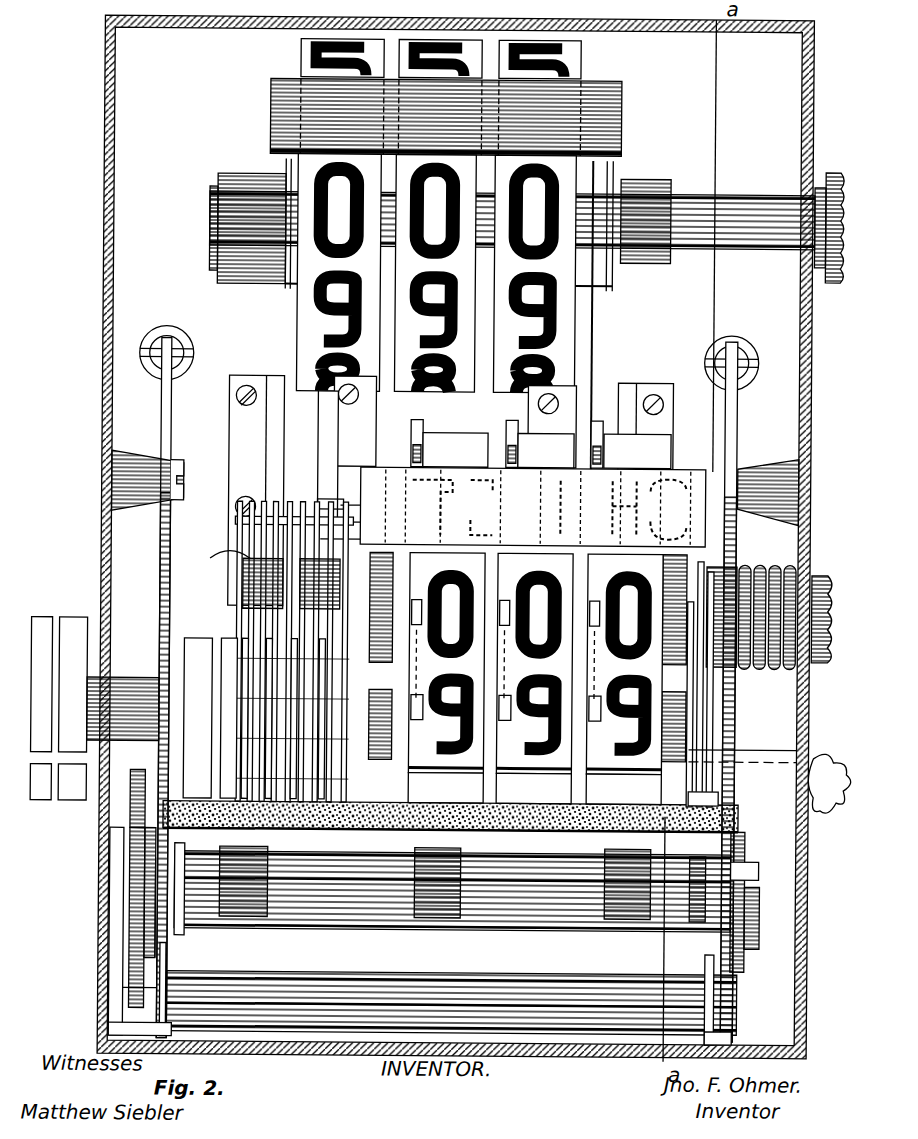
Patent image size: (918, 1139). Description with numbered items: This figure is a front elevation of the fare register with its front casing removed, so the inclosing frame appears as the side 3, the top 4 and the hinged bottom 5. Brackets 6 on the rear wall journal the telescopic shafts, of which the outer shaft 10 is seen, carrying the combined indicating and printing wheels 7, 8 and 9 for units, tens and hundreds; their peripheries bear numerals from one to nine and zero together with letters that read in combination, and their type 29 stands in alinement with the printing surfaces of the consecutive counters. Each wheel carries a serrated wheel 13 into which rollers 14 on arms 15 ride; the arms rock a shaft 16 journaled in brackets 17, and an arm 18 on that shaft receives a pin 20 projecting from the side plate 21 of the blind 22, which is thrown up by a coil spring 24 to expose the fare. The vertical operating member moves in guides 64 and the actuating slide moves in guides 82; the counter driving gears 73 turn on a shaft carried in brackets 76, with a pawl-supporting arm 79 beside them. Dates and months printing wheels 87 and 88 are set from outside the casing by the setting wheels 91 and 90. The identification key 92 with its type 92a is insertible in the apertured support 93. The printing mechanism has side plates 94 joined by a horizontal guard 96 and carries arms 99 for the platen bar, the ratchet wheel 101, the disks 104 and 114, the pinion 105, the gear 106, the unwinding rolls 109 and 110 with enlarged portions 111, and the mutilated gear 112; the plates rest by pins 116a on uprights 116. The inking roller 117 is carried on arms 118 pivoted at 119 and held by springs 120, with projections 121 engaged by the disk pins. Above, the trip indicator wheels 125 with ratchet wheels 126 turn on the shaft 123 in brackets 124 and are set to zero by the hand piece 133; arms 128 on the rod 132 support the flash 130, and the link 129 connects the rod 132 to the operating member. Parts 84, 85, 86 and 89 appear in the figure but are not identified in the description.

The casing side 3 is at (101, 300).
The casing top 4 is at (212, 30).
The casing bottom 5 is at (632, 1058).
The brackets 6 is at (382, 580).
The combined indicating and printing wheel 7 is at (660, 440).
The combined indicating and printing wheel 8 is at (545, 430).
The combined indicating and printing wheel 9 is at (474, 440).
The telescopic shaft 10 is at (822, 575).
The serrated wheel 13 is at (485, 565).
The rollers 14 is at (410, 665).
The arms 15 is at (513, 734).
The shaft 16 is at (534, 786).
The brackets 17 is at (672, 676).
The slotted arm 18 is at (705, 706).
The pin 20 is at (700, 688).
The side plate 21 is at (715, 722).
The blind 22 is at (533, 507).
The coil spring 24 is at (766, 565).
The type 29 is at (410, 424).
The guides 64 is at (655, 382).
The transfer or driving gears 73 is at (268, 518).
The brackets 76 is at (240, 570).
The pawl-supporting arm 79 is at (359, 537).
The guides 82 is at (280, 452).
The rod 84 is at (359, 520).
The bar 85 is at (335, 480).
The rod 86 is at (400, 506).
The dates printing wheel 87 is at (228, 640).
The months printing wheel 88 is at (192, 640).
The hub 89 is at (130, 680).
The setting wheel 90 is at (70, 620).
The date-setting wheel 91 is at (42, 620).
The identification key 92 is at (826, 812).
The type 92a is at (735, 800).
The apertured support 93 is at (758, 762).
The side plates 94 is at (185, 935).
The horizontal guard 96 is at (451, 998).
The arms 99 is at (555, 948).
The ratchet wheel 101 is at (158, 900).
The disk 104 is at (140, 862).
The pinion 105 is at (150, 882).
The gear 106 is at (132, 975).
The unwinding roll 109 is at (266, 905).
The unwinding roll 110 is at (335, 905).
The enlarged peripheral portions 111 is at (240, 905).
The mutilated gear 112 is at (758, 866).
The disk 114 is at (772, 918).
The uprights 116 is at (717, 1004).
The pins 116a is at (126, 998).
The inking roller 117 is at (512, 830).
The arms 118 is at (160, 418).
The pivot 119 is at (182, 468).
The coil springs 120 is at (165, 328).
The projections 121 is at (747, 840).
The shaft 123 is at (207, 218).
The brackets 124 is at (215, 178).
The passenger or trip indicator wheels 125 is at (297, 58).
The ratchet wheel 126 is at (295, 305).
The arms 128 is at (283, 165).
The link 129 is at (596, 306).
The blind or flash 130 is at (267, 122).
The shaft 132 is at (612, 284).
The hand piece 133 is at (812, 272).